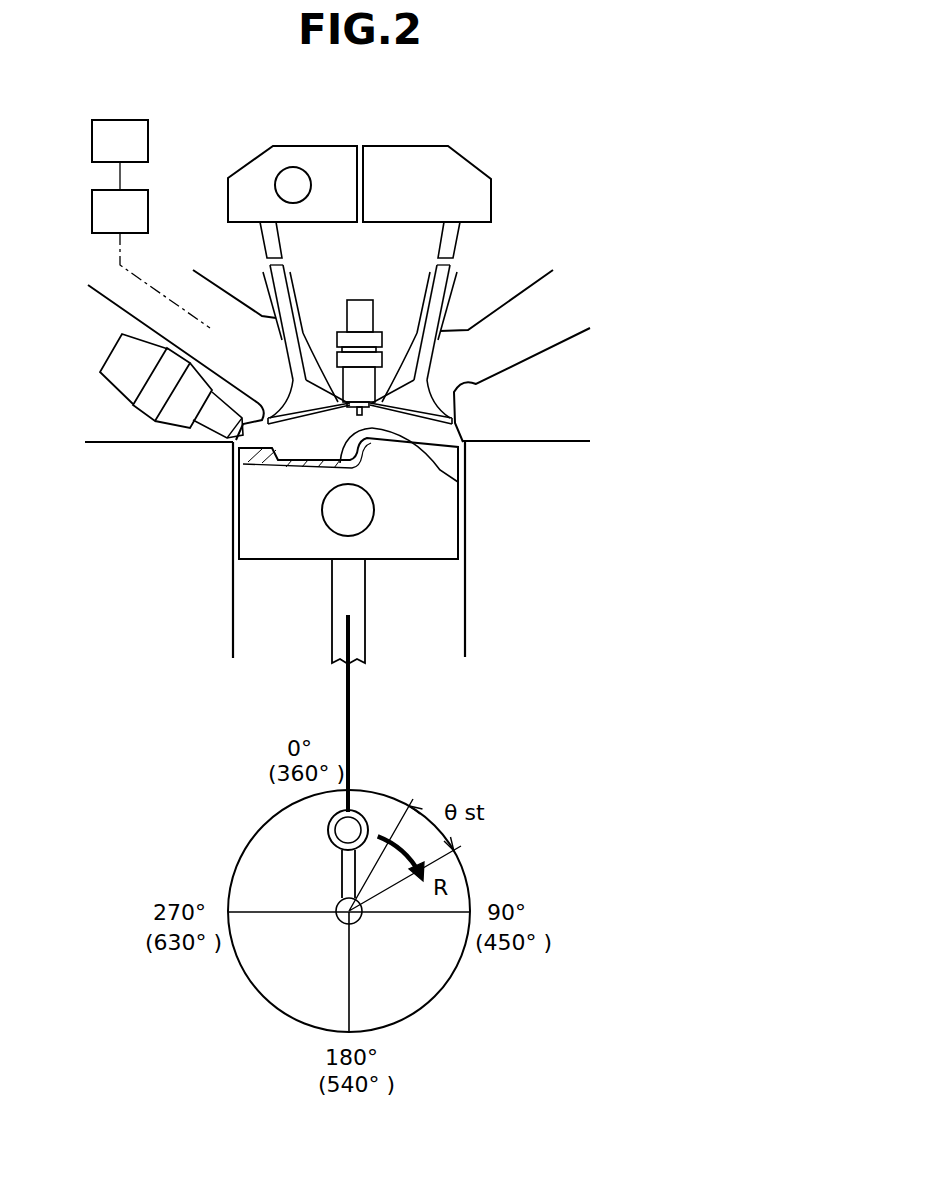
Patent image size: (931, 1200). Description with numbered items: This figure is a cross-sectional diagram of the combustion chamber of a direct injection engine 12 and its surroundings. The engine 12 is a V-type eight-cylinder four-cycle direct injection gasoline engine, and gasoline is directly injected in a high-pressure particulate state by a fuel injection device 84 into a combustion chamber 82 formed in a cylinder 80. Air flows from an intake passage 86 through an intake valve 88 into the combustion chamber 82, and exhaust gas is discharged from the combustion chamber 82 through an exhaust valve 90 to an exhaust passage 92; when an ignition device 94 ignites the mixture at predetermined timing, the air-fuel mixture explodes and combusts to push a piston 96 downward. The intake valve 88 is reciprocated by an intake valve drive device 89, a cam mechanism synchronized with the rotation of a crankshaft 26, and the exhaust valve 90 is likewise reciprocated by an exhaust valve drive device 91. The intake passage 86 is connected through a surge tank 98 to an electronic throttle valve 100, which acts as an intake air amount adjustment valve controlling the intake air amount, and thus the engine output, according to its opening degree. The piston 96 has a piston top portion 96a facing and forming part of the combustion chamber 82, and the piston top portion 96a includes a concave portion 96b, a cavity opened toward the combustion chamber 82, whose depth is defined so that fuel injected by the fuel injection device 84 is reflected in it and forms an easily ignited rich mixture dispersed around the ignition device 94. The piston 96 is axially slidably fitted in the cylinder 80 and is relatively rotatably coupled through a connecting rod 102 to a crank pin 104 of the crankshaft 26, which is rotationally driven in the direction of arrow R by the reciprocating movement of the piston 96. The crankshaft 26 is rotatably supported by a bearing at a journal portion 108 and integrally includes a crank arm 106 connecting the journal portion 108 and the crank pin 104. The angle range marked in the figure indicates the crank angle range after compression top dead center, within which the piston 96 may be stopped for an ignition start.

The engine 12 is at (562, 197).
The crankshaft 26 is at (366, 931).
The cylinder 80 is at (471, 583).
The combustion chamber 82 is at (446, 443).
The fuel injection device 84 is at (121, 375).
The intake passage 86 is at (222, 306).
The intake valve 88 is at (308, 395).
The intake valve drive device 89 is at (327, 155).
The exhaust valve 90 is at (462, 382).
The exhaust valve drive device 91 is at (437, 153).
The exhaust passage 92 is at (486, 330).
The ignition device 94 is at (363, 320).
The piston 96 is at (415, 562).
The piston top portion 96a is at (448, 455).
The concave portion 96b is at (458, 482).
The surge tank 98 is at (142, 205).
The electronic throttle valve 100 is at (142, 137).
The connecting rod 102 is at (352, 713).
The crank pin 104 is at (333, 830).
The crank arm 106 is at (347, 878).
The journal portion 108 is at (340, 918).